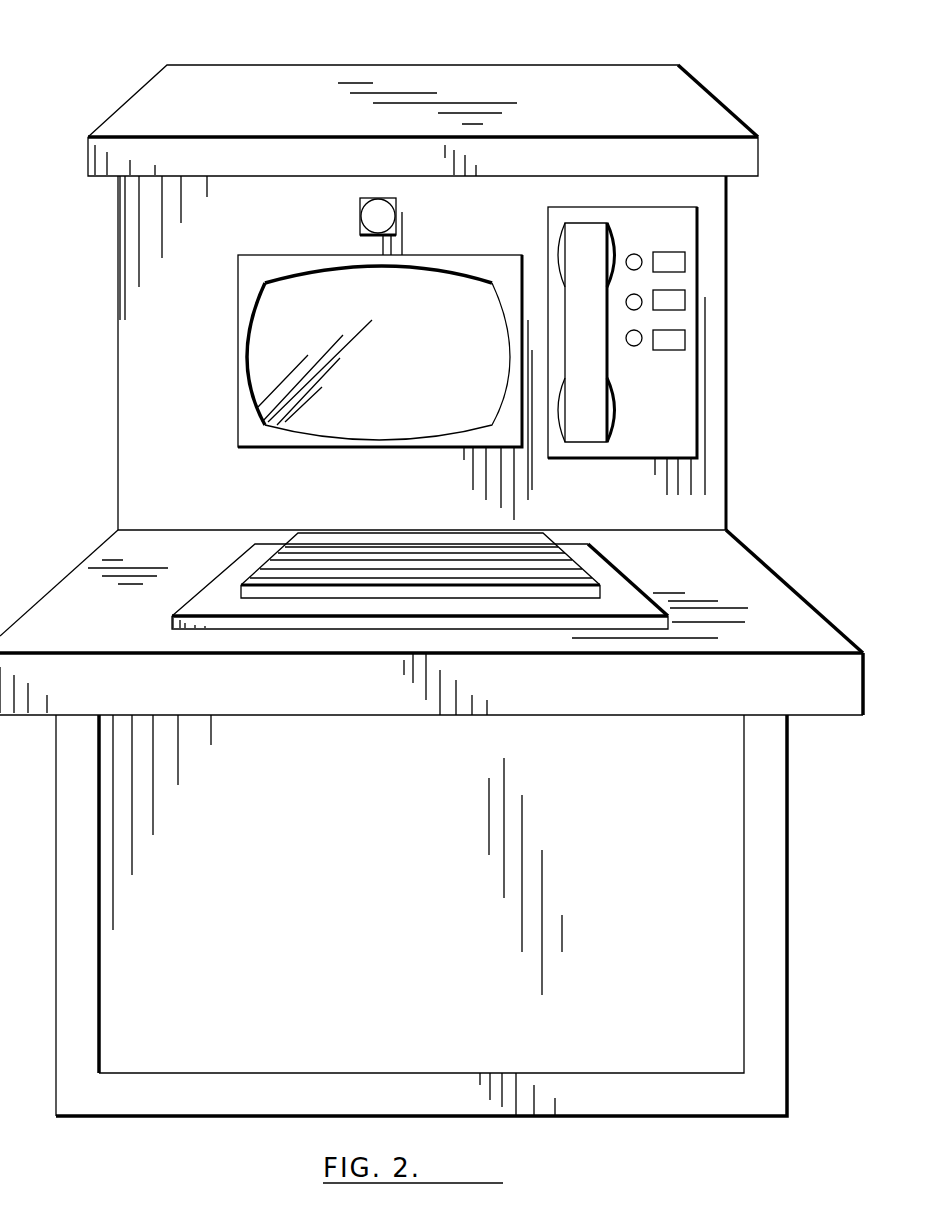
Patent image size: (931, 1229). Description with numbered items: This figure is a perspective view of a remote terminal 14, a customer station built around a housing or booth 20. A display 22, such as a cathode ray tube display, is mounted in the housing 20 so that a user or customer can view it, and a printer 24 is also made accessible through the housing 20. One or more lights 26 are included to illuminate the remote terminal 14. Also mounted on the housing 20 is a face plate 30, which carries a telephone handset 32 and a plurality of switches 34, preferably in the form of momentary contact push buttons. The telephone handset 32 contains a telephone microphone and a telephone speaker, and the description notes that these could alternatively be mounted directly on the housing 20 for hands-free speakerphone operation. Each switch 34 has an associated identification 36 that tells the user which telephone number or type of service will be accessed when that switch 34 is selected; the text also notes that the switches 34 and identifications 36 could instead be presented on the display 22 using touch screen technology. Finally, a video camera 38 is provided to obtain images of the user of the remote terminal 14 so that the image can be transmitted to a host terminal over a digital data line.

The remote terminal 14 is at (115, 58).
The housing 20 is at (545, 82).
The display 22 is at (400, 419).
The printer 24 is at (597, 573).
The lights 26 is at (267, 157).
The face plate 30 is at (683, 451).
The telephone handset 32 is at (604, 434).
The switches 34 is at (626, 338).
The identification 36 is at (672, 338).
The video camera 38 is at (360, 218).